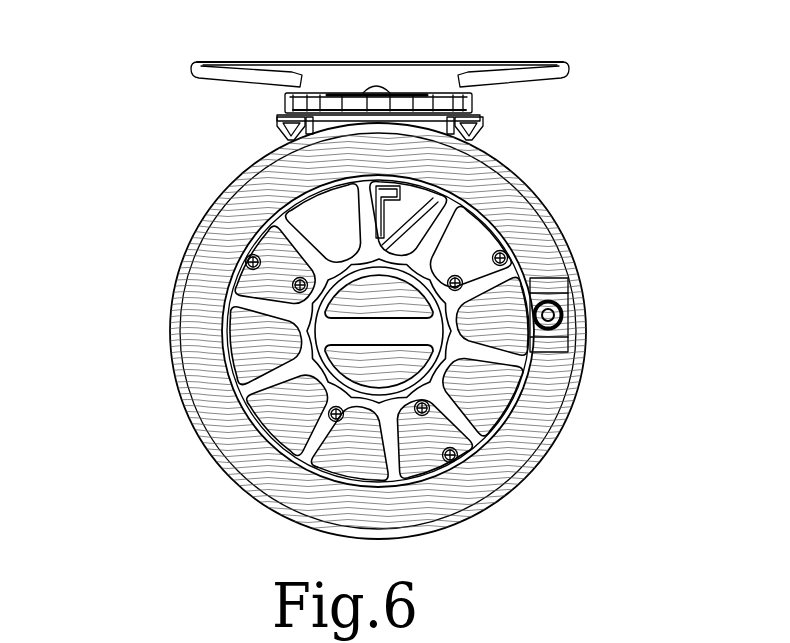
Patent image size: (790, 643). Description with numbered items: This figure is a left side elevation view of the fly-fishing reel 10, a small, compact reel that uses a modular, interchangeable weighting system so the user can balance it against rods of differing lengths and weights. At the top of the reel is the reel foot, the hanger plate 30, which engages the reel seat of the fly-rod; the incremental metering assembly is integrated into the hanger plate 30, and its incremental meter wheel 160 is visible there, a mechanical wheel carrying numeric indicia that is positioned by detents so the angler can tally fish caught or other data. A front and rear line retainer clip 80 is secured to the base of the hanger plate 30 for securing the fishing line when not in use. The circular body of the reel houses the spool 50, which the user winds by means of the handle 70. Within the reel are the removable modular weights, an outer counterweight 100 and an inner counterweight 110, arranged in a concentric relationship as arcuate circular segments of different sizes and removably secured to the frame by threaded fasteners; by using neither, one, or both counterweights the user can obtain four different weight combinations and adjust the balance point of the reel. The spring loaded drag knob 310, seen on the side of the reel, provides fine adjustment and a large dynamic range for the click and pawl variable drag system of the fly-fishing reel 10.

The fly-fishing reel 10 is at (662, 120).
The hanger plate 30 is at (248, 67).
The spool 50 is at (564, 231).
The handle 70 is at (553, 343).
The line retainer clip 80 is at (280, 123).
The outer counterweight 100 is at (503, 390).
The inner counterweight 110 is at (440, 410).
The incremental meter wheel 160 is at (456, 104).
The drag knob 310 is at (340, 332).